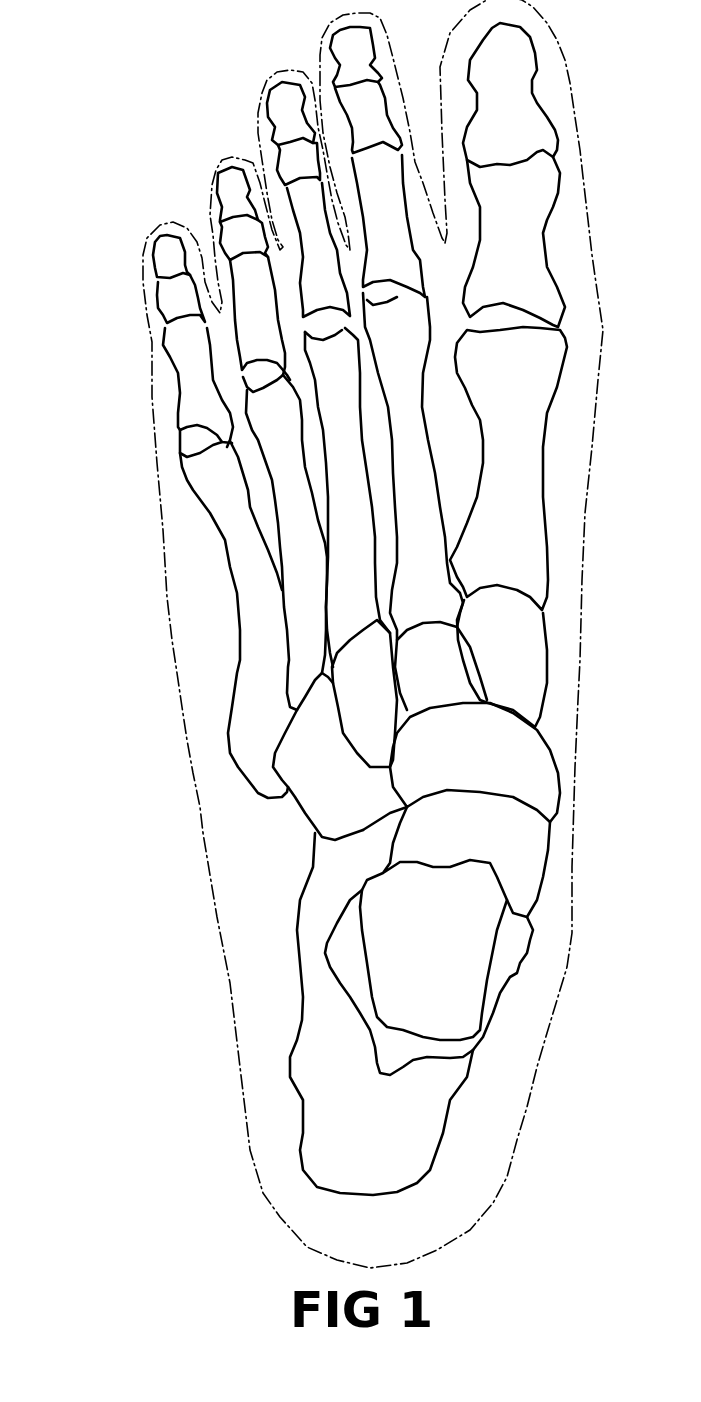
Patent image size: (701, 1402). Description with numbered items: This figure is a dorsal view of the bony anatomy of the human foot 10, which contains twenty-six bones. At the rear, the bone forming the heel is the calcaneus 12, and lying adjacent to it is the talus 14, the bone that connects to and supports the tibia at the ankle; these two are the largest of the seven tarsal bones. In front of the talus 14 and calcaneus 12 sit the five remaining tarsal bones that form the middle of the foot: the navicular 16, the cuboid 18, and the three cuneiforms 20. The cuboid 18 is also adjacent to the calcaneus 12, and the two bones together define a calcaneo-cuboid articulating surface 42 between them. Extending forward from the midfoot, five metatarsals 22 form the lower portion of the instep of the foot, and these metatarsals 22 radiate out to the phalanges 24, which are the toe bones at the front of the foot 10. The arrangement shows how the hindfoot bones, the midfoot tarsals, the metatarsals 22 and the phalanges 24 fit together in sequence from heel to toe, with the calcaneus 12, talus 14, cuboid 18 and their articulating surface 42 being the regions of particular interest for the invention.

The foot 10 is at (126, 90).
The calcaneus 12 is at (383, 1137).
The talus 14 is at (445, 955).
The navicular 16 is at (468, 762).
The cuboid 18 is at (353, 800).
The cuneiforms 20 is at (387, 720).
The metatarsals 22 is at (173, 820).
The phalanges 24 is at (97, 232).
The articulating surface 42 is at (363, 830).